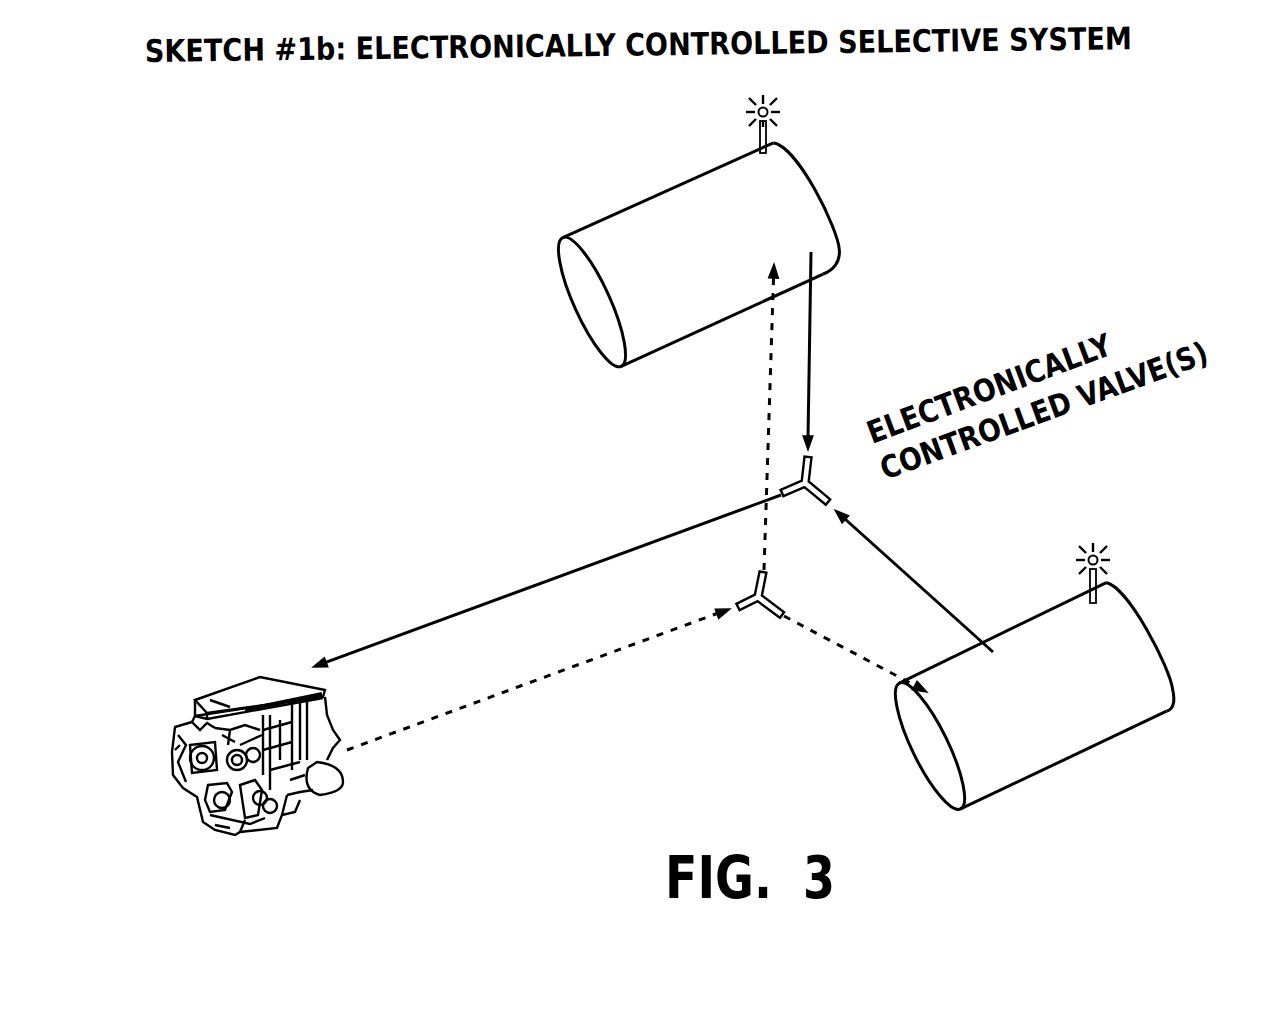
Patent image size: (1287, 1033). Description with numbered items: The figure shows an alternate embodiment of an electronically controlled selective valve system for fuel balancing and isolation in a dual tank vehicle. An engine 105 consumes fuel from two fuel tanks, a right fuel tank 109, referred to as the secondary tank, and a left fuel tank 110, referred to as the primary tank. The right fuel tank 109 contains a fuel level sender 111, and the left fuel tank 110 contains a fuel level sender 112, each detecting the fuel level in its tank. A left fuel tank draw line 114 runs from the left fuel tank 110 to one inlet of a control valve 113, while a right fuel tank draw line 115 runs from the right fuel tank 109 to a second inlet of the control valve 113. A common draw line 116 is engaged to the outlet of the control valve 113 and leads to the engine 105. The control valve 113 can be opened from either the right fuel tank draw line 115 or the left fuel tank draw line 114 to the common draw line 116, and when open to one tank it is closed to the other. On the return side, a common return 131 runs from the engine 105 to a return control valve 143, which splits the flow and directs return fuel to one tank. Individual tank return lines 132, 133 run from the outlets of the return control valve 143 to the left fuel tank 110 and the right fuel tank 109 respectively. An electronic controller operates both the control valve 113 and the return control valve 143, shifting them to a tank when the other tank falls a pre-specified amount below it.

The engine 105 is at (230, 675).
The right fuel tank 109 is at (657, 193).
The left fuel tank 110 is at (1160, 683).
The fuel level sender 111 is at (831, 119).
The fuel level sender 112 is at (1160, 564).
The control valve 113 is at (798, 512).
The left fuel tank draw line 114 is at (929, 572).
The right fuel tank draw line 115 is at (822, 364).
The common draw line 116 is at (416, 616).
The common return 131 is at (694, 631).
The tank return line 132 is at (865, 670).
The tank return line 133 is at (766, 378).
The return control valve 143 is at (742, 589).